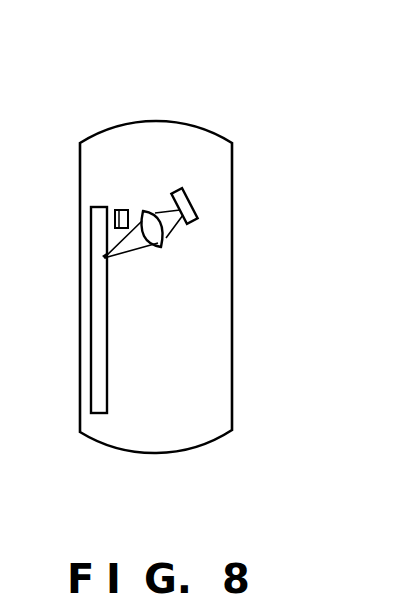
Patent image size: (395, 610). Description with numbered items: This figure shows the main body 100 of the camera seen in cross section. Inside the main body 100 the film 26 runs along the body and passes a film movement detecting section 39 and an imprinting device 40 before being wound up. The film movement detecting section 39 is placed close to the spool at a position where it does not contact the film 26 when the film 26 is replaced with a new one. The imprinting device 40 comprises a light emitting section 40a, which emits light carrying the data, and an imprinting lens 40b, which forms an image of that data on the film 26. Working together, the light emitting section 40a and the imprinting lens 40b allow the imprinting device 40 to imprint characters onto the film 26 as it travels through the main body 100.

The main body 100 is at (213, 438).
The film 26 is at (100, 292).
The film movement detecting section 39 is at (121, 210).
The imprinting device 40 is at (315, 55).
The light emitting section 40a is at (185, 192).
The imprinting lens 40b is at (150, 210).